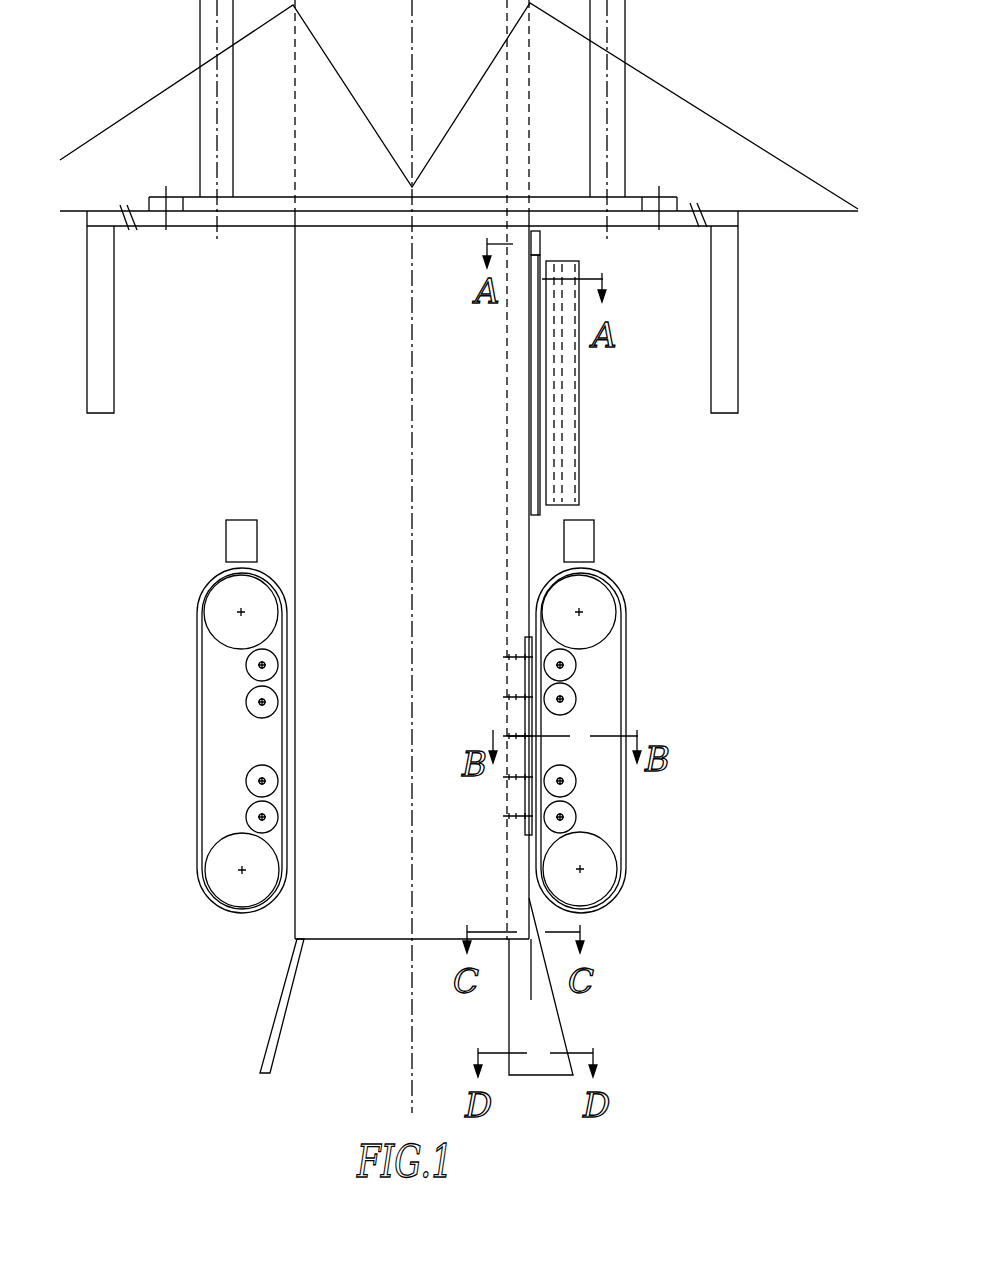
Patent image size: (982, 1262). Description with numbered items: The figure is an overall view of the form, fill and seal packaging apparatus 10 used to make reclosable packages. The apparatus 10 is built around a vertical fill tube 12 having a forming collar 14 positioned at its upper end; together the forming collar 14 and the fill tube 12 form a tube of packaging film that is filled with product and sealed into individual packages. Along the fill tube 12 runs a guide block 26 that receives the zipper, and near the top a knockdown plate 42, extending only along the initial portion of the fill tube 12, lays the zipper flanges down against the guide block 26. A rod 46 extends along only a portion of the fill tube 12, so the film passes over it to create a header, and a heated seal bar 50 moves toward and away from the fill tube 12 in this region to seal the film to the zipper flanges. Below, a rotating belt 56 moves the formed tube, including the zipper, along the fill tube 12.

The form, fill and seal packaging apparatus 10 is at (230, 458).
The fill tube 12 is at (295, 330).
The forming collar 14 is at (725, 127).
The guide block 26 is at (505, 447).
The knockdown plate 42 is at (533, 252).
The rod 46 is at (537, 383).
The heated seal bar 50 is at (580, 417).
The rotating belt 56 is at (625, 643).